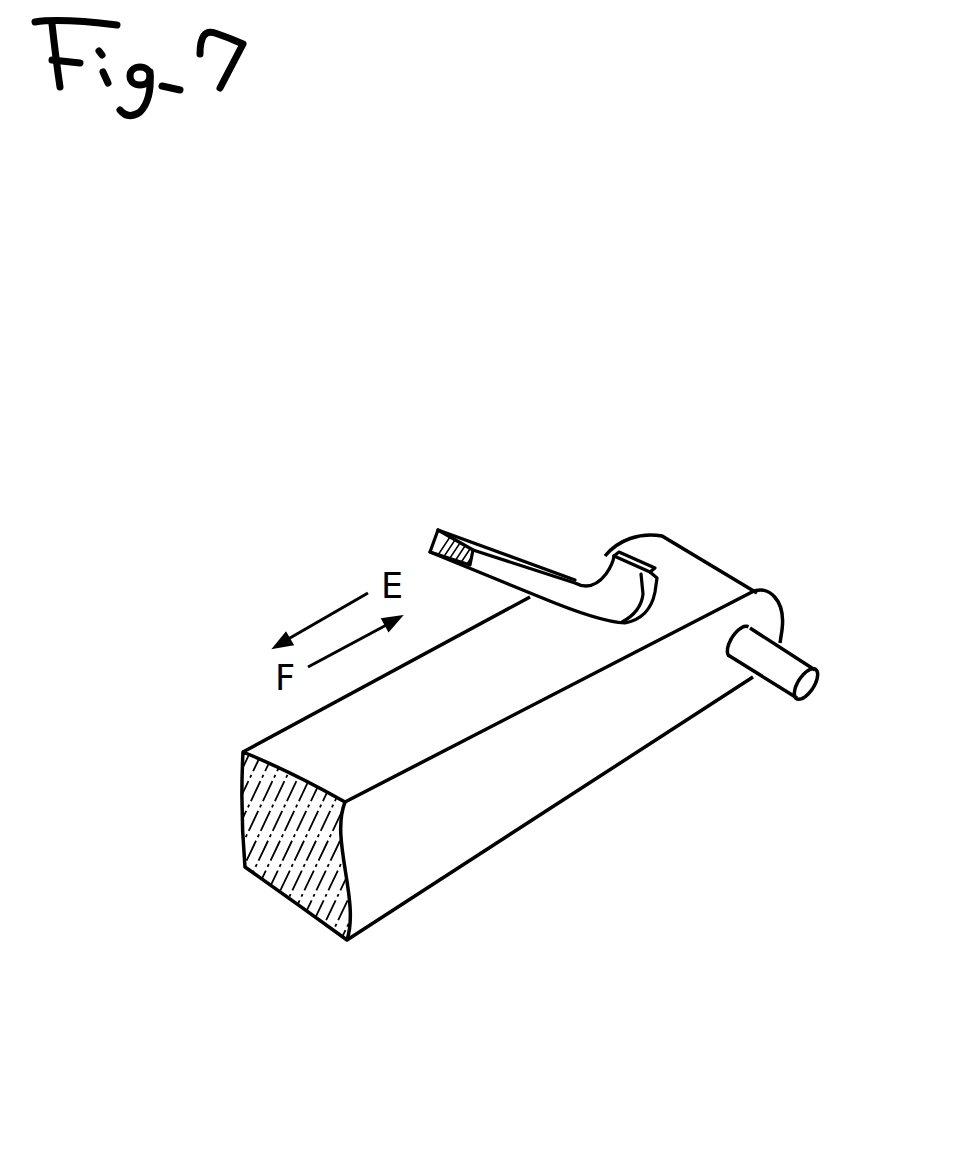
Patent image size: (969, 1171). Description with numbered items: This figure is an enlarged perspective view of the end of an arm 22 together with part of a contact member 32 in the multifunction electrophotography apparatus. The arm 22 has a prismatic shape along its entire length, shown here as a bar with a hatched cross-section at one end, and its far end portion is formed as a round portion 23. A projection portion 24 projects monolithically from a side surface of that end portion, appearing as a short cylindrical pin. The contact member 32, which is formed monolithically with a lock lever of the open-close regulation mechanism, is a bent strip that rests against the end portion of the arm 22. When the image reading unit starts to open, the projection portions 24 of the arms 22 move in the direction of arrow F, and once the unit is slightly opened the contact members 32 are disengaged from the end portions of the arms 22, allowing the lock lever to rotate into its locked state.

The arm 22 is at (475, 823).
The round portion 23 is at (710, 568).
The projection portion 24 is at (810, 683).
The contact member 32 is at (620, 592).